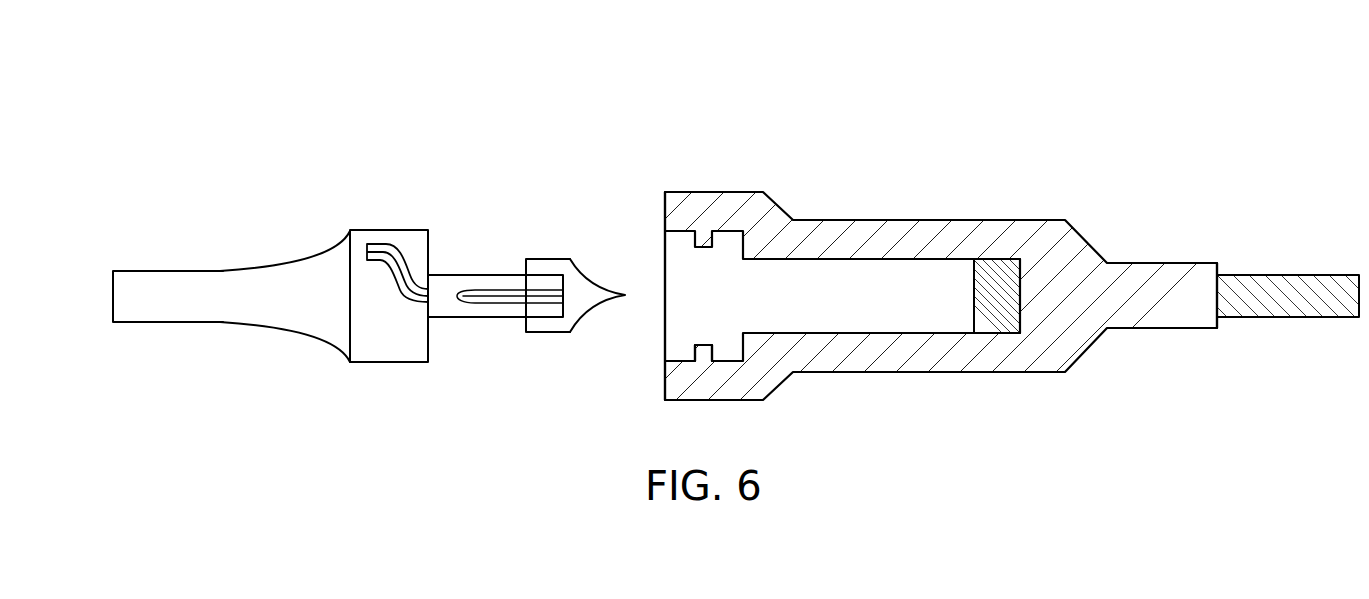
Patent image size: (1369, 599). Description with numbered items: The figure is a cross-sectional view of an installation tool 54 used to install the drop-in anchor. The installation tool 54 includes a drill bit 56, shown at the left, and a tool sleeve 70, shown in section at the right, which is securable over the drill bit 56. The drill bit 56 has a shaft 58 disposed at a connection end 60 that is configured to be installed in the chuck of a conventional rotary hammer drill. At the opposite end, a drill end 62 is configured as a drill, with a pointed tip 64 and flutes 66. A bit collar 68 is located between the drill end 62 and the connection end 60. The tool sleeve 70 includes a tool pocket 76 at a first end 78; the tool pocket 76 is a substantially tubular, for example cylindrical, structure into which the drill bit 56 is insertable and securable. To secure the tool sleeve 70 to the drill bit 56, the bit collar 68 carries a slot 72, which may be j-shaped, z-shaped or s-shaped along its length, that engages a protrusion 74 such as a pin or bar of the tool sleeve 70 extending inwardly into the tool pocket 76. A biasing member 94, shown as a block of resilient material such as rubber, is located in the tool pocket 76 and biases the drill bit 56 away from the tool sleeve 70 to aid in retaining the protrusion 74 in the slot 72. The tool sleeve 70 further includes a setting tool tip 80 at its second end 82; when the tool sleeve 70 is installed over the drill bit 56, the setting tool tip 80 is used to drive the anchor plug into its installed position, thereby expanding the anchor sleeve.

The installation tool 54 is at (680, 122).
The drill bit 56 is at (355, 141).
The shaft 58 is at (224, 271).
The connection end 60 is at (113, 297).
The drill end 62 is at (478, 275).
The pointed tip 64 is at (590, 312).
The flutes 66 is at (542, 333).
The bit collar 68 is at (388, 362).
The tool sleeve 70 is at (812, 228).
The slot 72 is at (392, 244).
The protrusion 74 is at (703, 350).
The tool pocket 76 is at (912, 268).
The first end 78 is at (665, 212).
The setting tool tip 80 is at (1306, 287).
The second end 82 is at (1218, 328).
The biasing member 94 is at (974, 312).